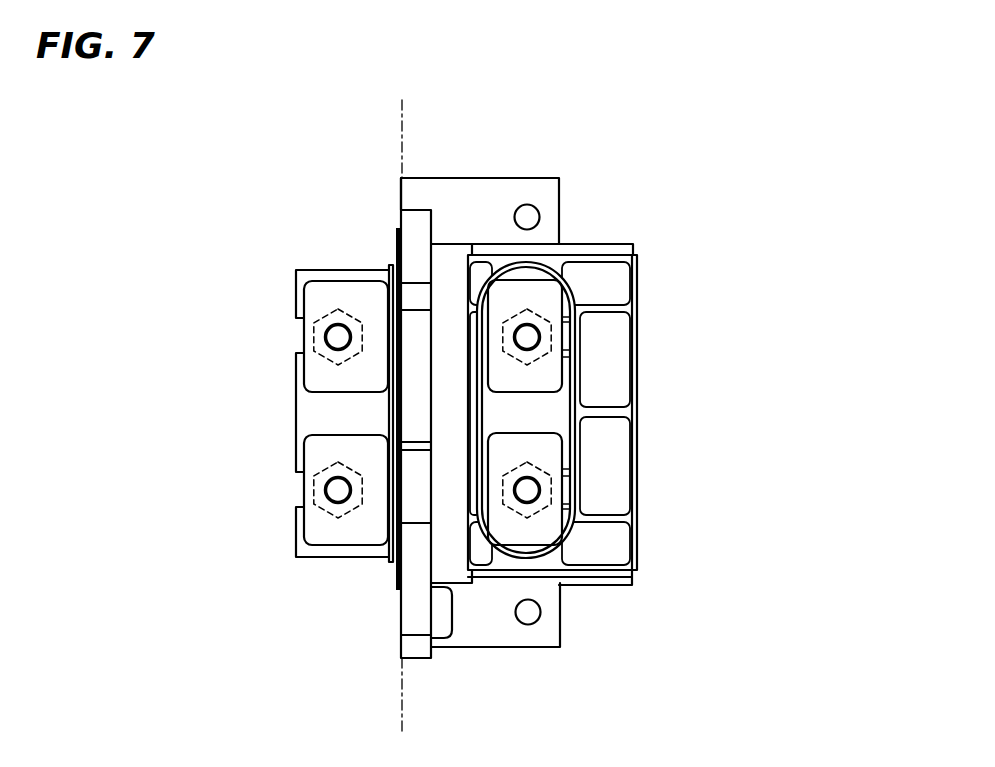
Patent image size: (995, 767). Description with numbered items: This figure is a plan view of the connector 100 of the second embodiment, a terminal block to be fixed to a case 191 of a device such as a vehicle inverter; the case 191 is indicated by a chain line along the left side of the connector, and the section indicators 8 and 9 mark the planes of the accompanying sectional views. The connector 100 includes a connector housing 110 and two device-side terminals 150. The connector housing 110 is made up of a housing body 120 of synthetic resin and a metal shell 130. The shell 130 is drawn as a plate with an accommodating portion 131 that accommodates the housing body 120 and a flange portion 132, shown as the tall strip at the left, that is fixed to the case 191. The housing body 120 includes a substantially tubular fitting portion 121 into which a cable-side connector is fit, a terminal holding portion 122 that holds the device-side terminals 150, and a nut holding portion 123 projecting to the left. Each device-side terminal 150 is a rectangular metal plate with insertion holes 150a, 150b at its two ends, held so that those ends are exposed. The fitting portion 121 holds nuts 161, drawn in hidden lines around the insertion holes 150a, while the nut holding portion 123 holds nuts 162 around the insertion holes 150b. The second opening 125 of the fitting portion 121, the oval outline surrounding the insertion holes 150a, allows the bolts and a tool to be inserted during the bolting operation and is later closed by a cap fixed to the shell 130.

The connector 100 is at (710, 176).
The connector housing 110 is at (629, 166).
The housing body 120 is at (641, 244).
The fitting portion 121 is at (638, 264).
The terminal holding portion 122 is at (557, 397).
The nut holding portion 123 is at (296, 407).
The second opening 125 is at (528, 268).
The shell 130 is at (593, 137).
The accommodating portion 131 is at (536, 178).
The flange portion 132 is at (431, 215).
The device-side terminal 150 is at (342, 280).
The insertion hole 150a is at (525, 480).
The insertion hole 150b is at (326, 338).
The nut 161 is at (549, 352).
The nut 162 is at (321, 358).
The case 191 is at (408, 110).
The section line 8 is at (409, 111).
The section line 9 is at (272, 318).